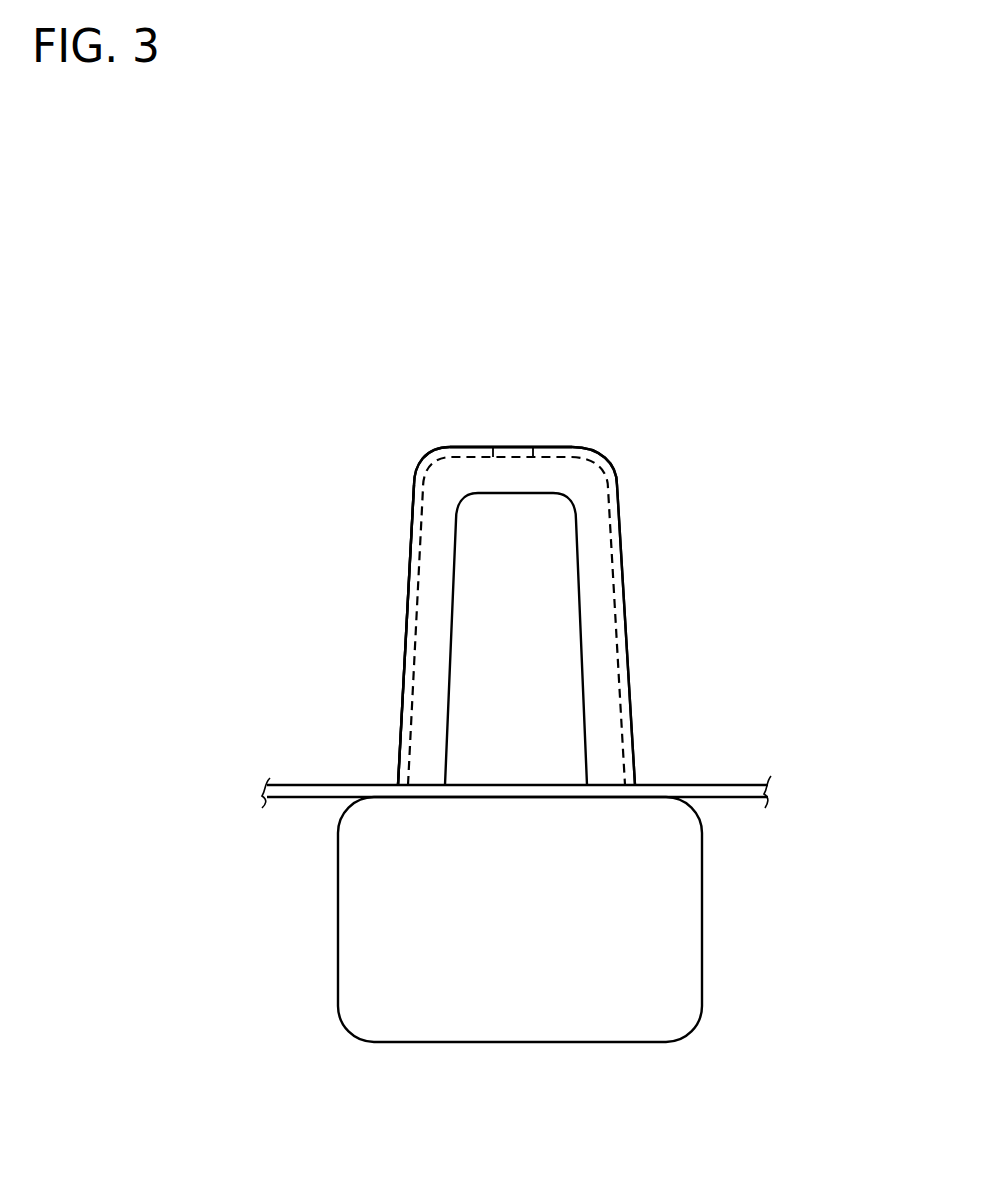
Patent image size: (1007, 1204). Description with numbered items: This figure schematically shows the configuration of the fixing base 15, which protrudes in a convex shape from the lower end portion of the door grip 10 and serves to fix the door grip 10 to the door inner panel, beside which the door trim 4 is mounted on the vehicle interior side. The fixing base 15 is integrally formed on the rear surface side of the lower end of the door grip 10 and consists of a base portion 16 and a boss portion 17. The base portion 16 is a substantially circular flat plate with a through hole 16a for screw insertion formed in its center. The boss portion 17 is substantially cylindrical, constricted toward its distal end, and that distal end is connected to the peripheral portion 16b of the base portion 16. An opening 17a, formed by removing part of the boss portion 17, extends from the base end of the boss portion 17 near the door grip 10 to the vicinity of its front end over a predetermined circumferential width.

The door trim 4 is at (331, 785).
The door grip 10 is at (705, 923).
The fixing base 15 is at (661, 502).
The base portion 16 is at (580, 447).
The through hole 16a is at (518, 447).
The peripheral portion 16b is at (421, 458).
The boss portion 17 is at (407, 625).
The opening 17a is at (582, 633).